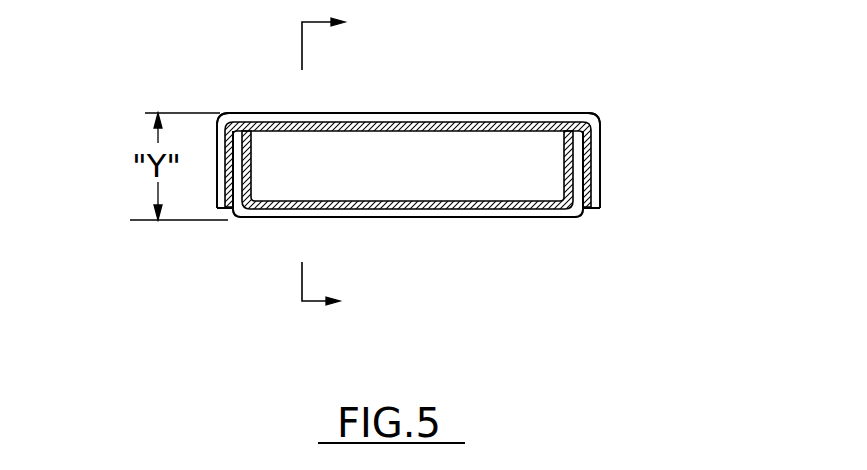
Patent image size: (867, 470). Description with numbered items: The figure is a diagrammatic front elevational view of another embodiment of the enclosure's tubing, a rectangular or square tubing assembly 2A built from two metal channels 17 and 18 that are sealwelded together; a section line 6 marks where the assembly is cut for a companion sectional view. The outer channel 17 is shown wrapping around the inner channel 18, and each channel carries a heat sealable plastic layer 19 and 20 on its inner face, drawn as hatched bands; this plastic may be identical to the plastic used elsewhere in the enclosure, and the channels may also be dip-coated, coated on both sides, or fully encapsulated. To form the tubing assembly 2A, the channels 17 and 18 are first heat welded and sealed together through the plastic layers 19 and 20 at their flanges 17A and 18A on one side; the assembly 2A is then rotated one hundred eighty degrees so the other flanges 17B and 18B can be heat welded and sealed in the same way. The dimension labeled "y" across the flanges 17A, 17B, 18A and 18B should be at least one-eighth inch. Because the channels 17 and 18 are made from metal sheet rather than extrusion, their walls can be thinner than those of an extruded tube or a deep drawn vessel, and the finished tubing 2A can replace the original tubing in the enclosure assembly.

The tubing assembly 2A is at (452, 338).
The section line 6- 6 is at (337, 160).
The metal channel 17 is at (352, 112).
The flange of channel 17 17A is at (602, 167).
The other flange of channel 17 17B is at (217, 185).
The metal channel 18 is at (482, 220).
The flange of channel 18 18A is at (584, 163).
The other flange of channel 18 18B is at (240, 180).
The heat sealable plastic layer 19 is at (457, 123).
The heat sealable plastic layer 20 is at (547, 214).